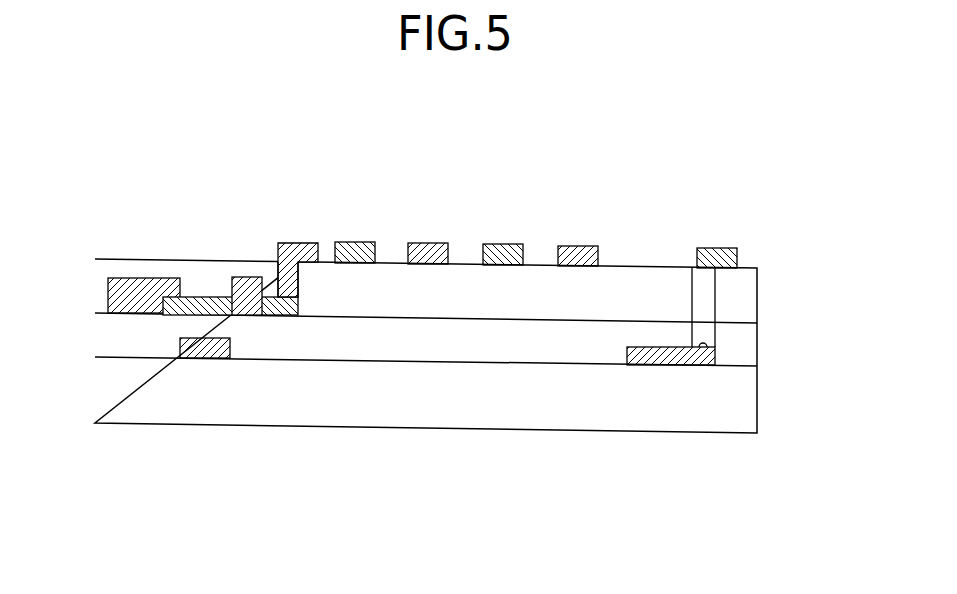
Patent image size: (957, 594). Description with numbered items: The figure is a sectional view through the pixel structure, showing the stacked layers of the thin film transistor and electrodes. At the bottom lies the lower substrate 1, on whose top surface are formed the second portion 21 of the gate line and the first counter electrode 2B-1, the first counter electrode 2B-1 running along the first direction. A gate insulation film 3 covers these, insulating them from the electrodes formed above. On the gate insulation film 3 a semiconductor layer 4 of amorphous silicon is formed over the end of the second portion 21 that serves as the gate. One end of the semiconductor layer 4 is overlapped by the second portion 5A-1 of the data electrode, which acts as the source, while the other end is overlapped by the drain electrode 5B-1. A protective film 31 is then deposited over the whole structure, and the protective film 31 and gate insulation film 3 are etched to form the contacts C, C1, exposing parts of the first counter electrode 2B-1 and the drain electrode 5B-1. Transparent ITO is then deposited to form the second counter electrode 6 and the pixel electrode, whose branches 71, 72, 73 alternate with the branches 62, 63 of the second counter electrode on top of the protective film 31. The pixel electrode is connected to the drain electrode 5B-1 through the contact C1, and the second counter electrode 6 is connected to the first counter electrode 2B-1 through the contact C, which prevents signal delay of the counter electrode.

The lower substrate 1 is at (752, 398).
The gate insulation film 3 is at (95, 332).
The protective film 31 is at (95, 292).
The semiconductor layer 4 is at (202, 297).
The second portion of the data electrode 5A-1 is at (128, 277).
The drain electrode 5B-1 is at (242, 277).
The branch of the pixel electrode 71 is at (300, 243).
The branch of the pixel electrode 72 is at (428, 243).
The branch of the pixel electrode 73 is at (580, 246).
The branch of the second counter electrode 62 is at (357, 243).
The branch of the second counter electrode 63 is at (503, 244).
The second counter electrode 6 is at (720, 248).
The second portion of the gate line 21 is at (200, 358).
The first counter electrode 2B-1 is at (647, 365).
The contact C is at (707, 366).
The contact C1 is at (298, 295).